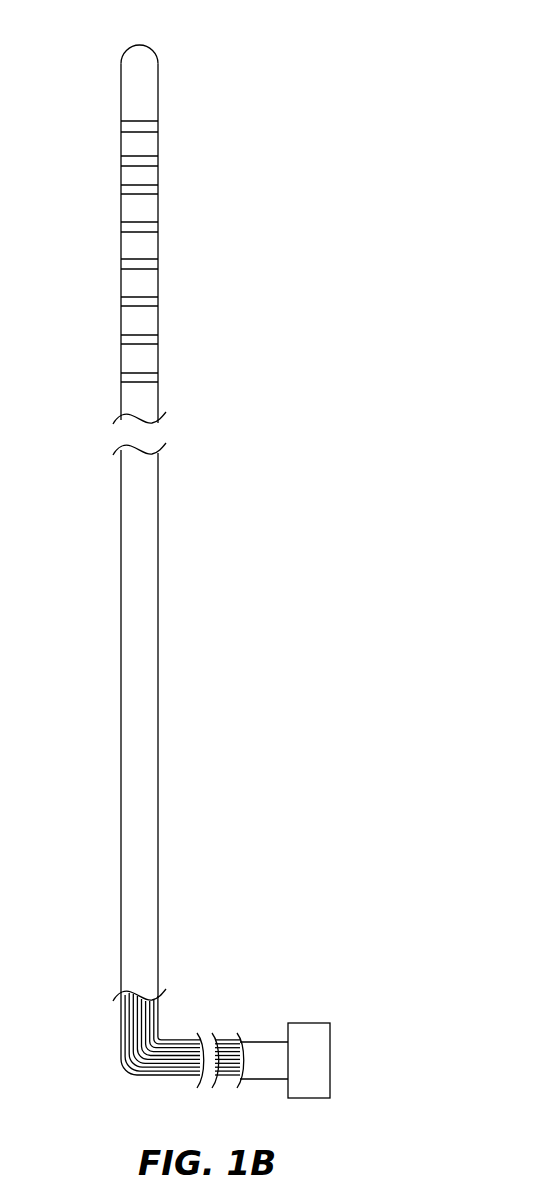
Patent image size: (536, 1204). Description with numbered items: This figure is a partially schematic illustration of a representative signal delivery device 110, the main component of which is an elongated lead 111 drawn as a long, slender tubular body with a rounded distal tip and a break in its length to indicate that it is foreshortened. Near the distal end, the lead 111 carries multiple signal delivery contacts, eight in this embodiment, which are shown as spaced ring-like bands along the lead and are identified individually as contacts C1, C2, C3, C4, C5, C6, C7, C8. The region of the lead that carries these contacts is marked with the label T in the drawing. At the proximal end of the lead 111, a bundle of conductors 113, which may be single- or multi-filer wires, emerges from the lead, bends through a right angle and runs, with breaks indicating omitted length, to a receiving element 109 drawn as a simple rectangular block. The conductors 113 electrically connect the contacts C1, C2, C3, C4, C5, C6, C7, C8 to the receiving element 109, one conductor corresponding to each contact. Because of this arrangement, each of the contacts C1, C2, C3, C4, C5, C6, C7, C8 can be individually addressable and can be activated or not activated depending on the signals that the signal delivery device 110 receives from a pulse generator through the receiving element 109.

The signal delivery device 110 is at (353, 83).
The lead 111 is at (158, 563).
The conductors 113 is at (157, 997).
The receiving element 109 is at (330, 1047).
The tip region T is at (192, 291).
The contact C1 is at (127, 126).
The contact C2 is at (127, 161).
The contact C3 is at (127, 190).
The contact C4 is at (127, 227).
The contact C5 is at (127, 264).
The contact C6 is at (127, 302).
The contact C7 is at (127, 340).
The contact C8 is at (127, 378).